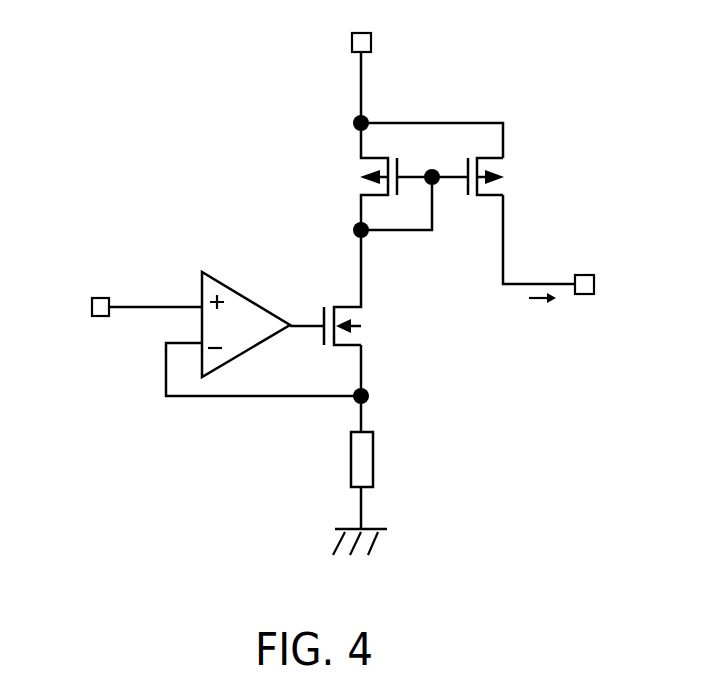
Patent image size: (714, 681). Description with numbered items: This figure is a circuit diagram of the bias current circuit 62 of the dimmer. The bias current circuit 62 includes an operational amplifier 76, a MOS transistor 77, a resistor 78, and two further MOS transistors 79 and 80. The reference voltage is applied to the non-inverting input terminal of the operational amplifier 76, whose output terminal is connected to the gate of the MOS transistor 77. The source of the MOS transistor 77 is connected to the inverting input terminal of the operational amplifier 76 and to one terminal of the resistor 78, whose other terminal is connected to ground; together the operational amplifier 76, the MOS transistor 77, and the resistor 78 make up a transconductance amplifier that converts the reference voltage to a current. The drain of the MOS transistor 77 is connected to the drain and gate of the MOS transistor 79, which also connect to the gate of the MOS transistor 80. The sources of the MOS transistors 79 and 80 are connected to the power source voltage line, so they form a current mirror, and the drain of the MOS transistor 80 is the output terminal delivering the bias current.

The bias current circuit 62 is at (583, 101).
The operational amplifier 76 is at (252, 296).
The MOS transistor 77 is at (365, 313).
The resistor 78 is at (374, 460).
The MOS transistor 79 is at (353, 170).
The MOS transistor 80 is at (506, 168).